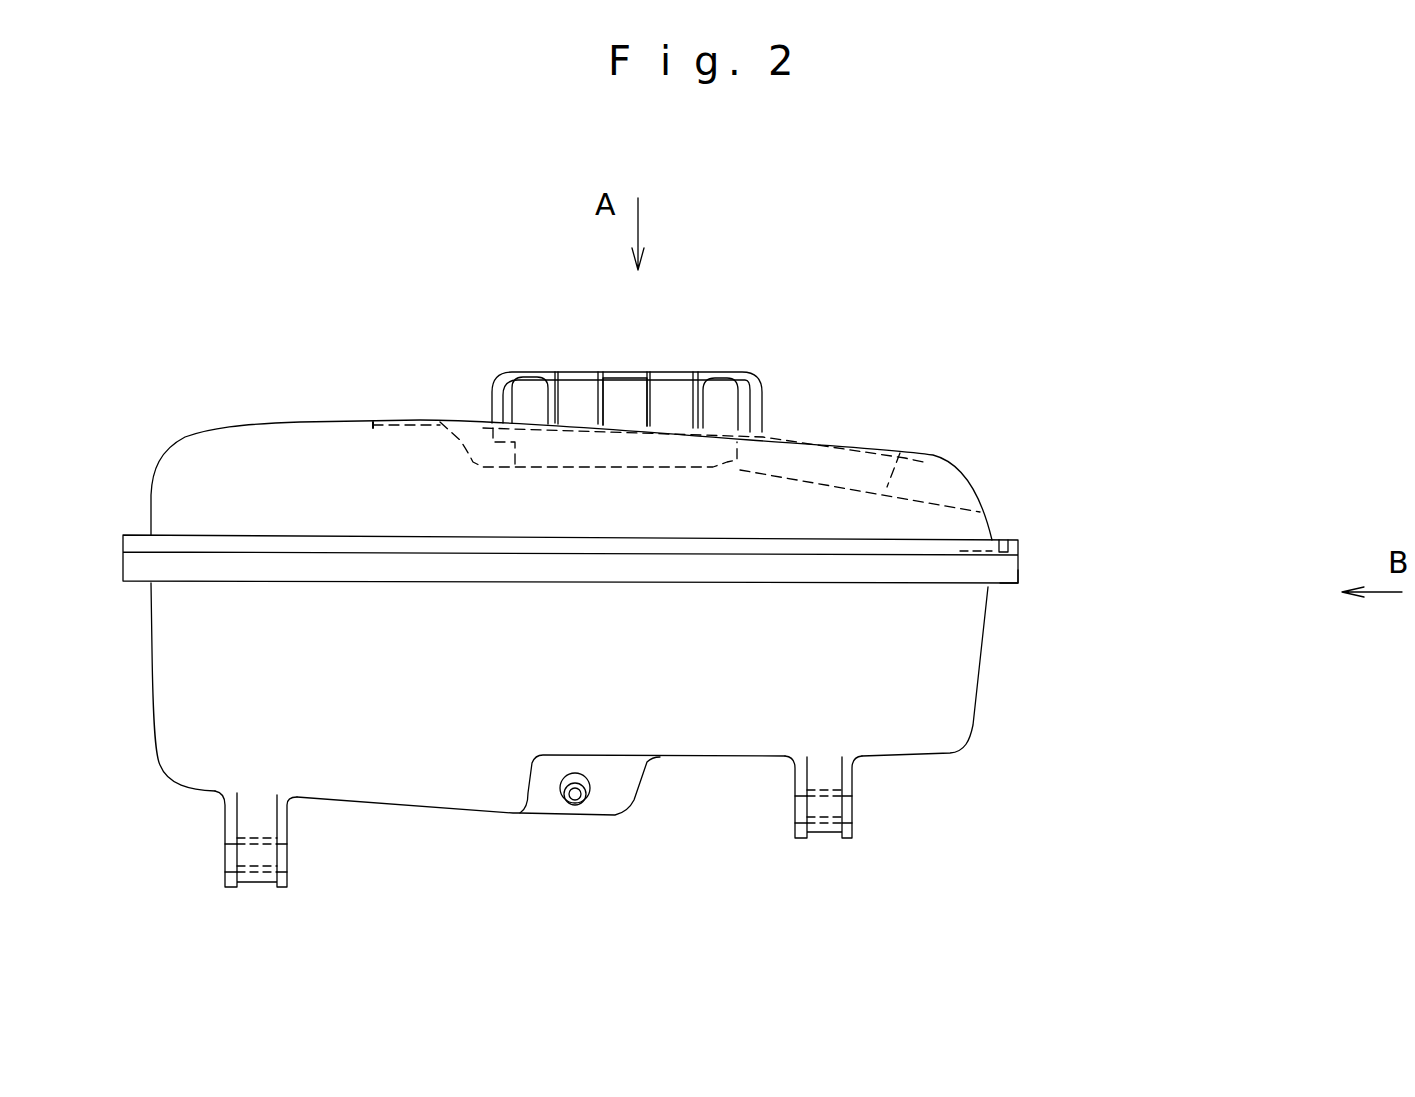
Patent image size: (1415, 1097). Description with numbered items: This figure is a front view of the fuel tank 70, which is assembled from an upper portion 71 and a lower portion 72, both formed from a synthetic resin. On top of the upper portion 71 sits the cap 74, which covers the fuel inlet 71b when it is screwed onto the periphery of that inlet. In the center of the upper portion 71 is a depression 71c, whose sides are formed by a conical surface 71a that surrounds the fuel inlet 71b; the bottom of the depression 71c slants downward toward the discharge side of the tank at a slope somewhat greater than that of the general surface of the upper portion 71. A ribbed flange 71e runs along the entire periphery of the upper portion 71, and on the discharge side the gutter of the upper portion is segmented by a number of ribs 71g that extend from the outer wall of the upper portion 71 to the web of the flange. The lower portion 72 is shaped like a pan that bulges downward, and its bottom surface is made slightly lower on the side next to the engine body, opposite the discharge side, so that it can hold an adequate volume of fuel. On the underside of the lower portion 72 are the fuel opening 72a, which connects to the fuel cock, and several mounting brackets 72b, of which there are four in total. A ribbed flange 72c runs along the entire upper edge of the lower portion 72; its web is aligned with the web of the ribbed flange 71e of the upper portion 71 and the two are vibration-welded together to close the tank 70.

The fuel tank 70 is at (330, 372).
The upper portion 71 is at (990, 472).
The conical surface 71a is at (467, 423).
The fuel inlet 71b is at (820, 438).
The depression 71c is at (900, 462).
The ribbed flange 71e is at (1020, 553).
The ribs 71g is at (998, 538).
The lower portion 72 is at (985, 722).
The fuel opening 72a is at (590, 795).
The mounting brackets 72b is at (852, 808).
The ribbed flange 72c is at (1020, 583).
The cap 74 is at (720, 372).